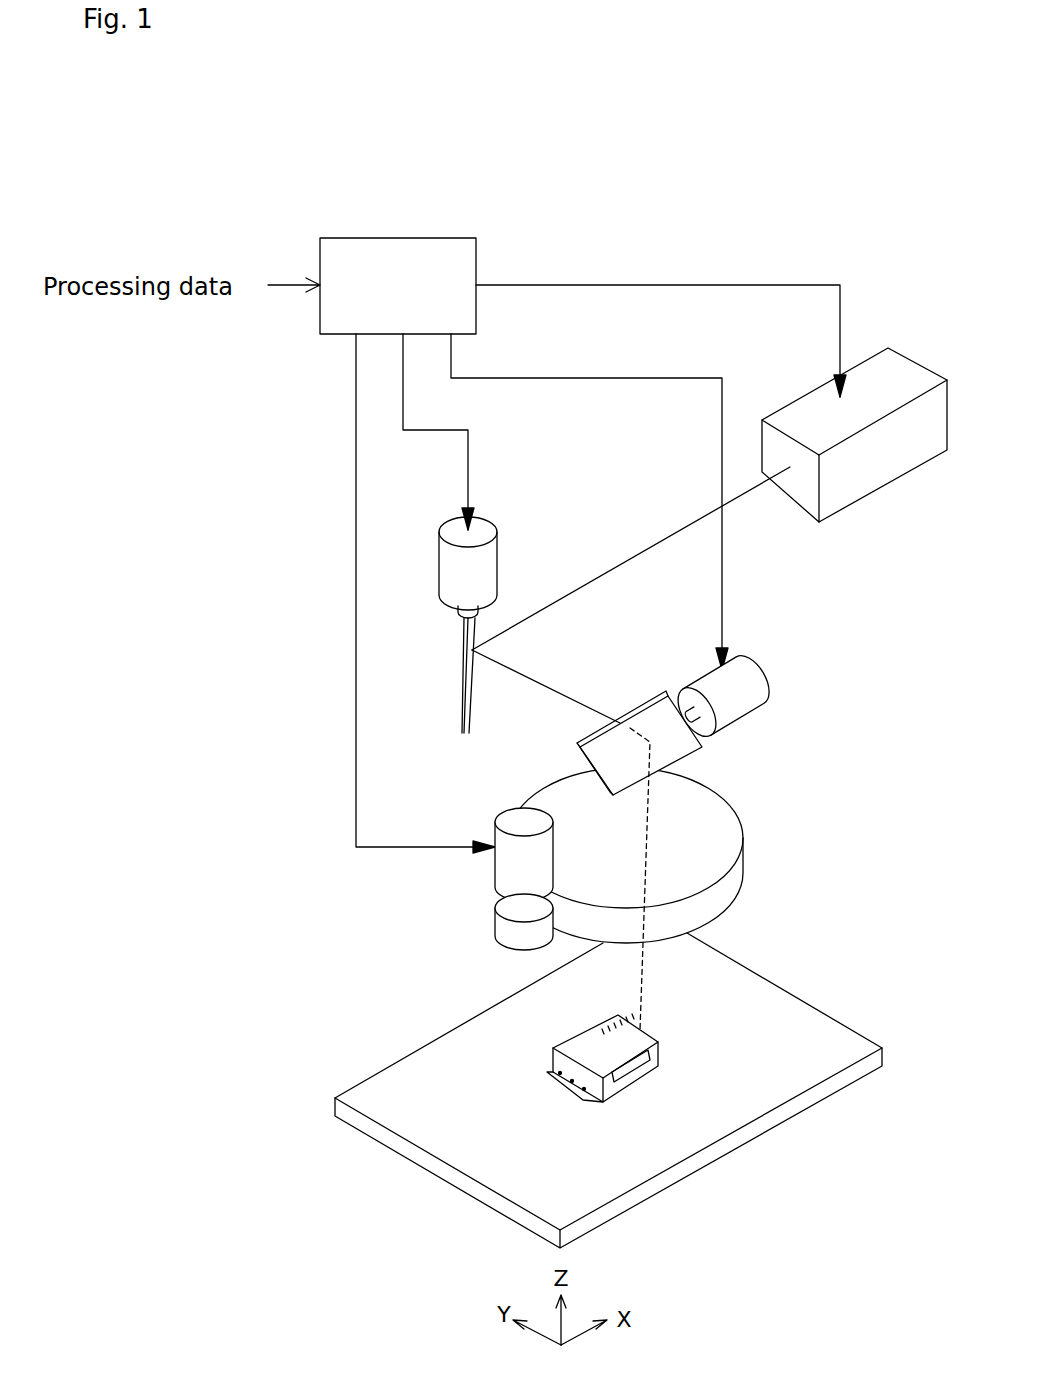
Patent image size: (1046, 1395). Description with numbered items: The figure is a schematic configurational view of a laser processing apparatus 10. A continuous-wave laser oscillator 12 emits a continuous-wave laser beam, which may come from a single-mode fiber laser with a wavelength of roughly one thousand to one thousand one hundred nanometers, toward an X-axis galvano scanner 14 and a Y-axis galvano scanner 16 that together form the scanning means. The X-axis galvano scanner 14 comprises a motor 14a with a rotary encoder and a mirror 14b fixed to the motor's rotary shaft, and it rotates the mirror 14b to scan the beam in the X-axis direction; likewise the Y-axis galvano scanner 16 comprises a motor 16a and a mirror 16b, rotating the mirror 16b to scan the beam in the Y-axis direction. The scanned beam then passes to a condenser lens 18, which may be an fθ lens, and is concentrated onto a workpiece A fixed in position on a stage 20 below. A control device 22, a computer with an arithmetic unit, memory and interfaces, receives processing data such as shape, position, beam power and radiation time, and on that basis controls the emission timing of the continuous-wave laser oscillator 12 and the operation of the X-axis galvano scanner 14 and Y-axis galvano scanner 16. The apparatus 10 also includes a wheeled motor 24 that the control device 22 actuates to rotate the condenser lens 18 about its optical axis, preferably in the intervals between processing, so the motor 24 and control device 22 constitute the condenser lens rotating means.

The laser processing apparatus 10 is at (817, 168).
The continuous-wave laser oscillator 12 is at (895, 363).
The X-axis galvano scanner 14 is at (476, 599).
The motor 14a is at (498, 563).
The mirror 14b is at (463, 677).
The Y-axis galvano scanner 16 is at (705, 696).
The motor 16a is at (702, 680).
The mirror 16b is at (645, 705).
The condenser lens 18 is at (733, 810).
The stage 20 is at (815, 1033).
The control device 22 is at (443, 238).
The motor 24 is at (500, 820).
The workpiece A is at (647, 1018).